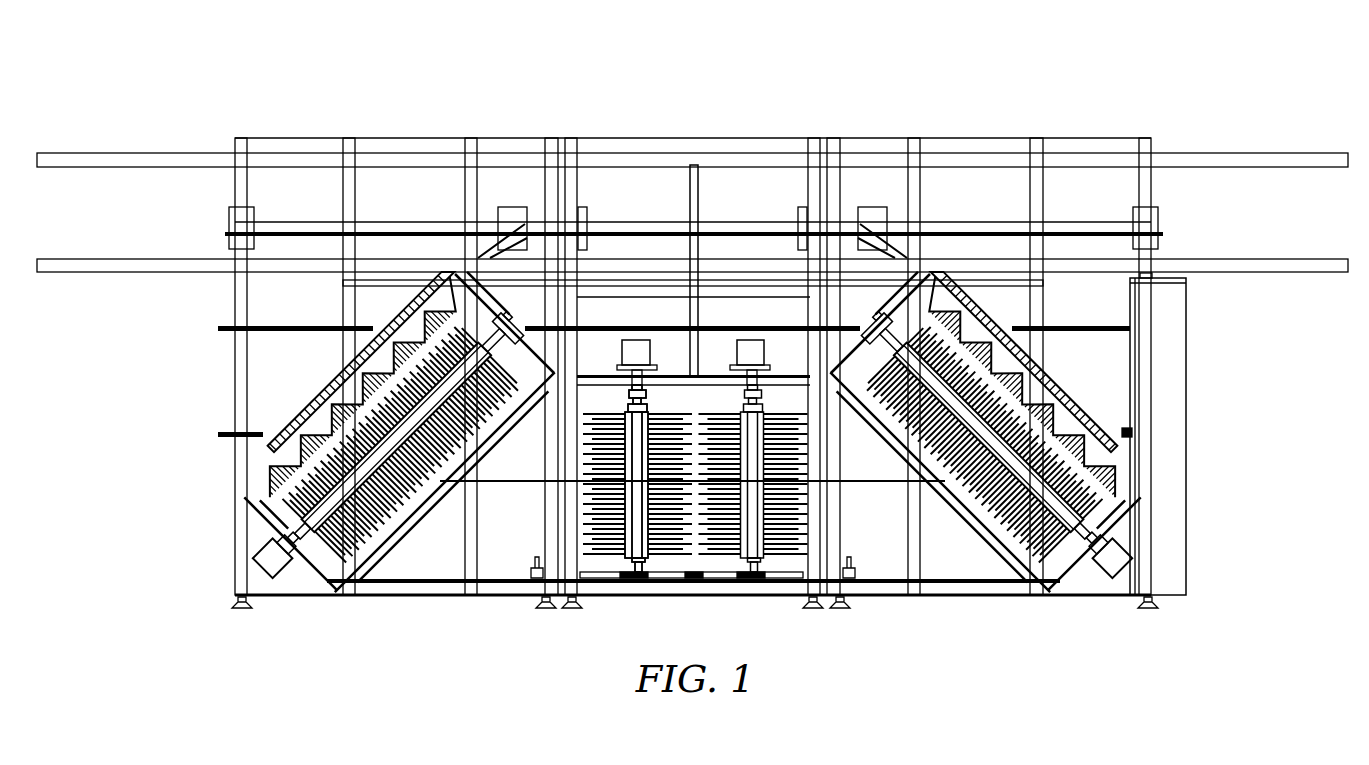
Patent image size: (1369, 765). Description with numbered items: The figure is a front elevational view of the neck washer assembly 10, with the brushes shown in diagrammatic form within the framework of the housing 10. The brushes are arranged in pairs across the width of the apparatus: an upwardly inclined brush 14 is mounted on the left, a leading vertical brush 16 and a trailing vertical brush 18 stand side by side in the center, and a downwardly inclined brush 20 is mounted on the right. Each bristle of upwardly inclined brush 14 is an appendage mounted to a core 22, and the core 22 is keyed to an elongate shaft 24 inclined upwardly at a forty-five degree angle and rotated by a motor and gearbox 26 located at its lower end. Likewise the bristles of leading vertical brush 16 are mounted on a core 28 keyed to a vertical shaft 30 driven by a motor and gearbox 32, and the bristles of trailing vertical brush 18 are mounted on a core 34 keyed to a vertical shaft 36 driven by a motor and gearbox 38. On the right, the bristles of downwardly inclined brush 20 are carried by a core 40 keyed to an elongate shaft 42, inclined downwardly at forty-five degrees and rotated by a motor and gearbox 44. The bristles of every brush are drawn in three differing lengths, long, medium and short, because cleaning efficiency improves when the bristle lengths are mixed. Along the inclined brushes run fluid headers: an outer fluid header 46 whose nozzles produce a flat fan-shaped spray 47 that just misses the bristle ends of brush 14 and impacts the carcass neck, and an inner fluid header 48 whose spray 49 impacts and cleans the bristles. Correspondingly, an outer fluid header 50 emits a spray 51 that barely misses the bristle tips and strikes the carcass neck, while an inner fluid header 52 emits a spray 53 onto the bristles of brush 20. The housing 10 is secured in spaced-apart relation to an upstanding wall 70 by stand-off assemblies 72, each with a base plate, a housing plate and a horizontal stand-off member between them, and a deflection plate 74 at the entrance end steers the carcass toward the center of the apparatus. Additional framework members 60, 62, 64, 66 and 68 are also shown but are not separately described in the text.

The neck washer assembly housing 10 is at (970, 106).
The upwardly inclined brush 14 is at (338, 415).
The leading vertical brush 16 is at (608, 412).
The trailing vertical brush 18 is at (732, 412).
The downwardly inclined brush 20 is at (990, 520).
The core 22 is at (400, 515).
The elongate shaft 24 is at (437, 305).
The motor and gearbox 26 is at (258, 553).
The core 28 is at (620, 508).
The vertical shaft 30 is at (620, 565).
The motor and gearbox 32 is at (640, 340).
The core 34 is at (733, 534).
The vertical shaft 36 is at (760, 566).
The motor and gearbox 38 is at (746, 340).
The core 40 is at (1030, 550).
The elongate shaft 42 is at (1080, 537).
The motor and gearbox 44 is at (1110, 565).
The outer fluid header 46 is at (387, 323).
The flat fan-shaped spray 47 is at (313, 405).
The inner fluid header 48 is at (445, 266).
The flat fan-shaped spray 49 is at (268, 464).
The outer fluid header 50 is at (1057, 373).
The flat fan-shaped spray 51 is at (1077, 405).
The inner fluid header 52 is at (1032, 352).
The flat fan-shaped spray 53 is at (950, 303).
The first cross rod 60 is at (255, 326).
The center post 62 is at (665, 330).
The second cross rod 64 is at (1100, 326).
The lower cross rod 66 is at (240, 436).
The rod bracket 68 is at (1135, 432).
The upstanding wall 70 is at (848, 481).
The stand off assemblies 72 is at (895, 579).
The deflection plate 74 is at (1163, 315).